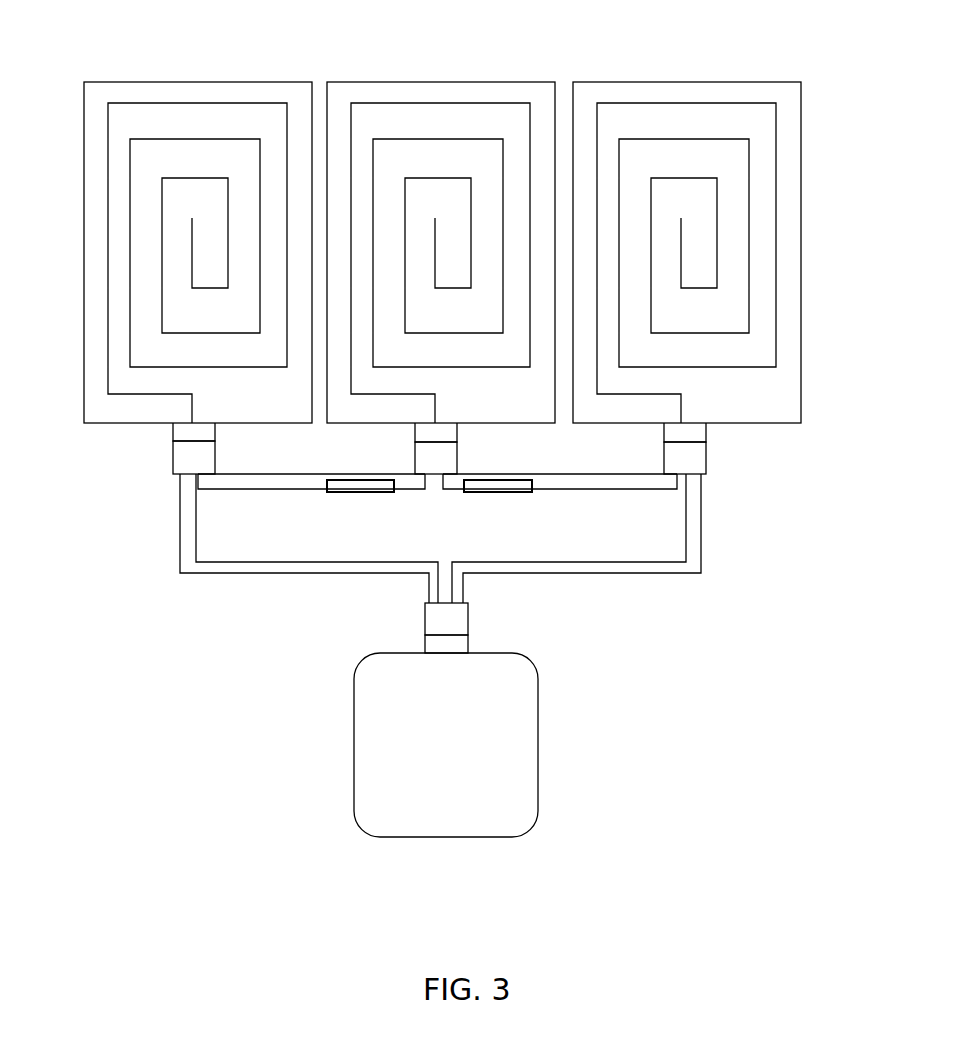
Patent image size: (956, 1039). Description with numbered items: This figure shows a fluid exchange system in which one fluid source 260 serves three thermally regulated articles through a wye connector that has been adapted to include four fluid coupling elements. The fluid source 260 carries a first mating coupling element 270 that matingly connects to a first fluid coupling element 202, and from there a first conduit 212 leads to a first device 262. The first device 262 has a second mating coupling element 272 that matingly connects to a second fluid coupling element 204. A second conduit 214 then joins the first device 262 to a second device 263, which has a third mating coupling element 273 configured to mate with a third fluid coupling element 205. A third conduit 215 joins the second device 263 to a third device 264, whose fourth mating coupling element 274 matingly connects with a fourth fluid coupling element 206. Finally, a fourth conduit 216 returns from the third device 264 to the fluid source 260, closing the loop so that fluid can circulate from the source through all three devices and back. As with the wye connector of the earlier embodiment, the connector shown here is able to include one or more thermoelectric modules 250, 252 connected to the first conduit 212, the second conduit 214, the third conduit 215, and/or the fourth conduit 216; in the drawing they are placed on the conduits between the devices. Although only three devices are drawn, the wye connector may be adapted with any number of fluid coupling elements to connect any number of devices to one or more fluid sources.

The third device 264 is at (162, 81).
The second device 263 is at (398, 81).
The first device 262 is at (635, 81).
The fourth mating coupling element 274 is at (173, 433).
The third mating coupling element 273 is at (413, 433).
The second mating coupling element 272 is at (664, 433).
The fourth fluid coupling element 206 is at (172, 457).
The third fluid coupling element 205 is at (458, 455).
The second fluid coupling element 204 is at (708, 458).
The third conduit 215 is at (255, 492).
The second conduit 214 is at (587, 492).
The thermoelectric module 252 is at (360, 493).
The thermoelectric module 250 is at (495, 493).
The fourth conduit 216 is at (237, 574).
The first conduit 212 is at (576, 575).
The first fluid coupling element 202 is at (425, 618).
The first mating coupling element 270 is at (468, 642).
The fluid source 260 is at (354, 767).